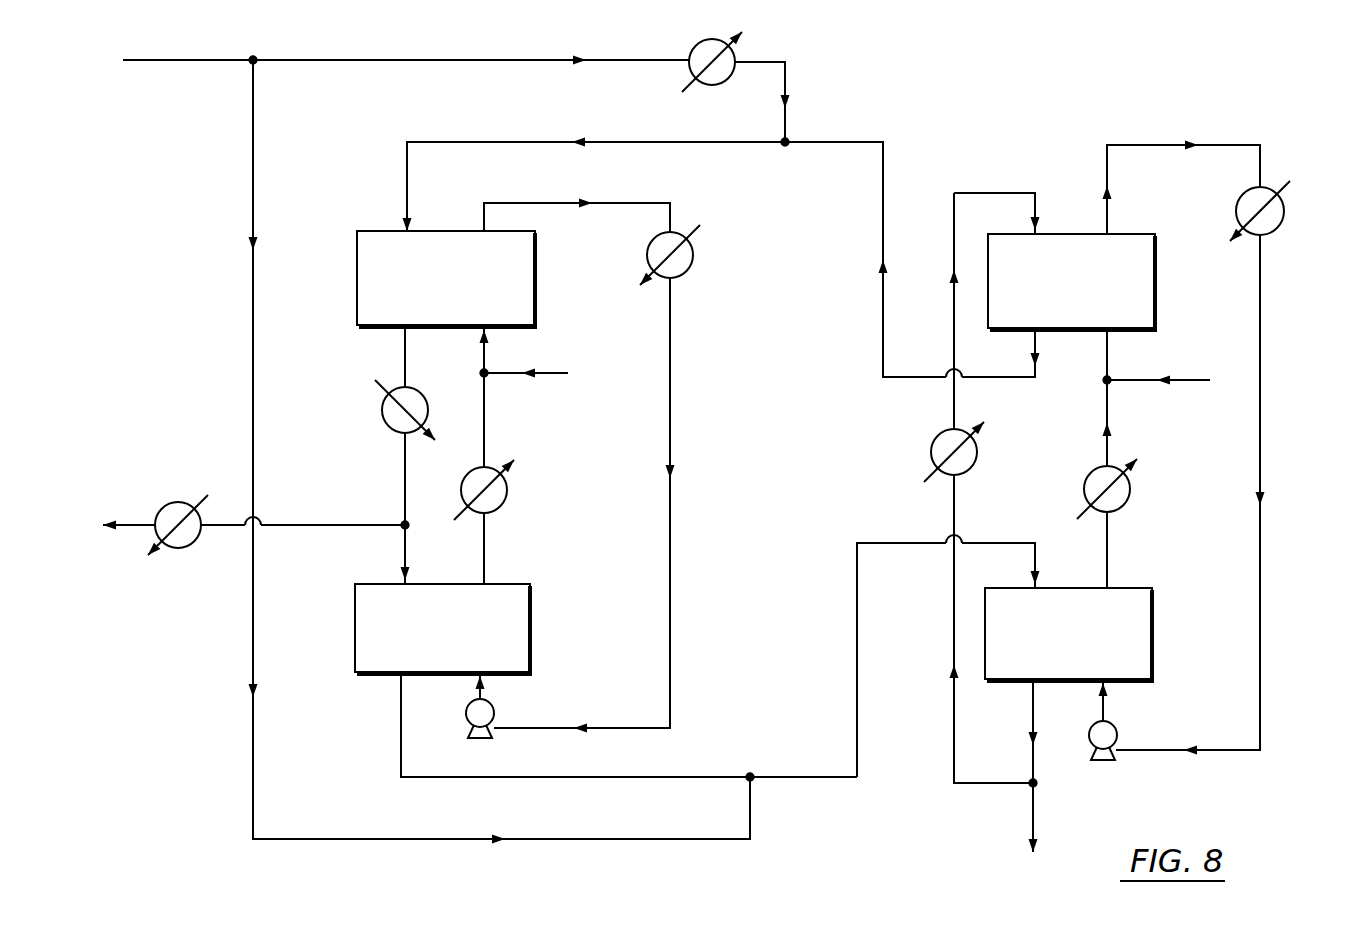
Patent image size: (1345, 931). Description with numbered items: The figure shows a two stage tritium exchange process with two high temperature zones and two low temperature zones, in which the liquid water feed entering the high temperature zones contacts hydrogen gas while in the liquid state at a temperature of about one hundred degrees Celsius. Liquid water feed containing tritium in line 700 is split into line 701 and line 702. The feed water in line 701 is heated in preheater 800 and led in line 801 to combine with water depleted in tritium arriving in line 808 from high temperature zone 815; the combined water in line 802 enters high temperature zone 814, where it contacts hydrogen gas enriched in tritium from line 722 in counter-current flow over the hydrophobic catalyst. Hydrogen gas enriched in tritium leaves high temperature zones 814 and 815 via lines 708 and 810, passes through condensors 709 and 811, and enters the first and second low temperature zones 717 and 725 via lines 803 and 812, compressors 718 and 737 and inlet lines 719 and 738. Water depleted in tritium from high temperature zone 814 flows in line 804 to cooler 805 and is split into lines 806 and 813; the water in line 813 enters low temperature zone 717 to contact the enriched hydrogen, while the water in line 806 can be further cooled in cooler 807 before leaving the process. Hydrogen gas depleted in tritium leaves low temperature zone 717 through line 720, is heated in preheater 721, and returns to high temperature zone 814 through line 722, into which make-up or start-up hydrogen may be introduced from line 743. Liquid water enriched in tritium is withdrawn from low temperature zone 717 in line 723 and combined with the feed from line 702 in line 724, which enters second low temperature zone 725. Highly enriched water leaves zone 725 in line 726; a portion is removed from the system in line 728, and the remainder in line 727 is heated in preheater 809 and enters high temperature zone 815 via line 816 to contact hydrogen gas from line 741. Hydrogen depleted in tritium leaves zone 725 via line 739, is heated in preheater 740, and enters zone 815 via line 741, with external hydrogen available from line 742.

The line 700 is at (160, 60).
The line 701 is at (522, 60).
The line 702 is at (253, 352).
The line 708 is at (605, 202).
The condensor 709 is at (692, 261).
The first low temperature zone 717 is at (531, 639).
The compressor 718 is at (487, 733).
The inlet line 719 is at (487, 698).
The line 720 is at (484, 541).
The preheater 721 is at (506, 498).
The inlet line 722 is at (484, 421).
The line 723 is at (652, 777).
The line 724 is at (857, 742).
The second low temperature zone 725 is at (1152, 633).
The line 726 is at (1036, 761).
The line 727 is at (951, 710).
The line 728 is at (1033, 810).
The compressor 737 is at (1118, 742).
The inlet line 738 is at (1103, 704).
The line 739 is at (1107, 554).
The preheater 740 is at (1130, 492).
The line 741 is at (1107, 360).
The line 742 is at (1132, 382).
The line 743 is at (552, 373).
The preheater 800 is at (742, 52).
The line 801 is at (787, 112).
The line 802 is at (604, 141).
The line 803 is at (670, 421).
The line 804 is at (405, 366).
The cooler 805 is at (436, 394).
The line 806 is at (362, 525).
The cooler 807 is at (174, 500).
The line 808 is at (883, 296).
The preheater 809 is at (930, 452).
The line 810 is at (1212, 145).
The condensor 811 is at (1285, 216).
The line 812 is at (1260, 458).
The line 813 is at (405, 547).
The high temperature zone 814 is at (357, 280).
The high temperature zone 815 is at (1155, 276).
The line 816 is at (1000, 193).